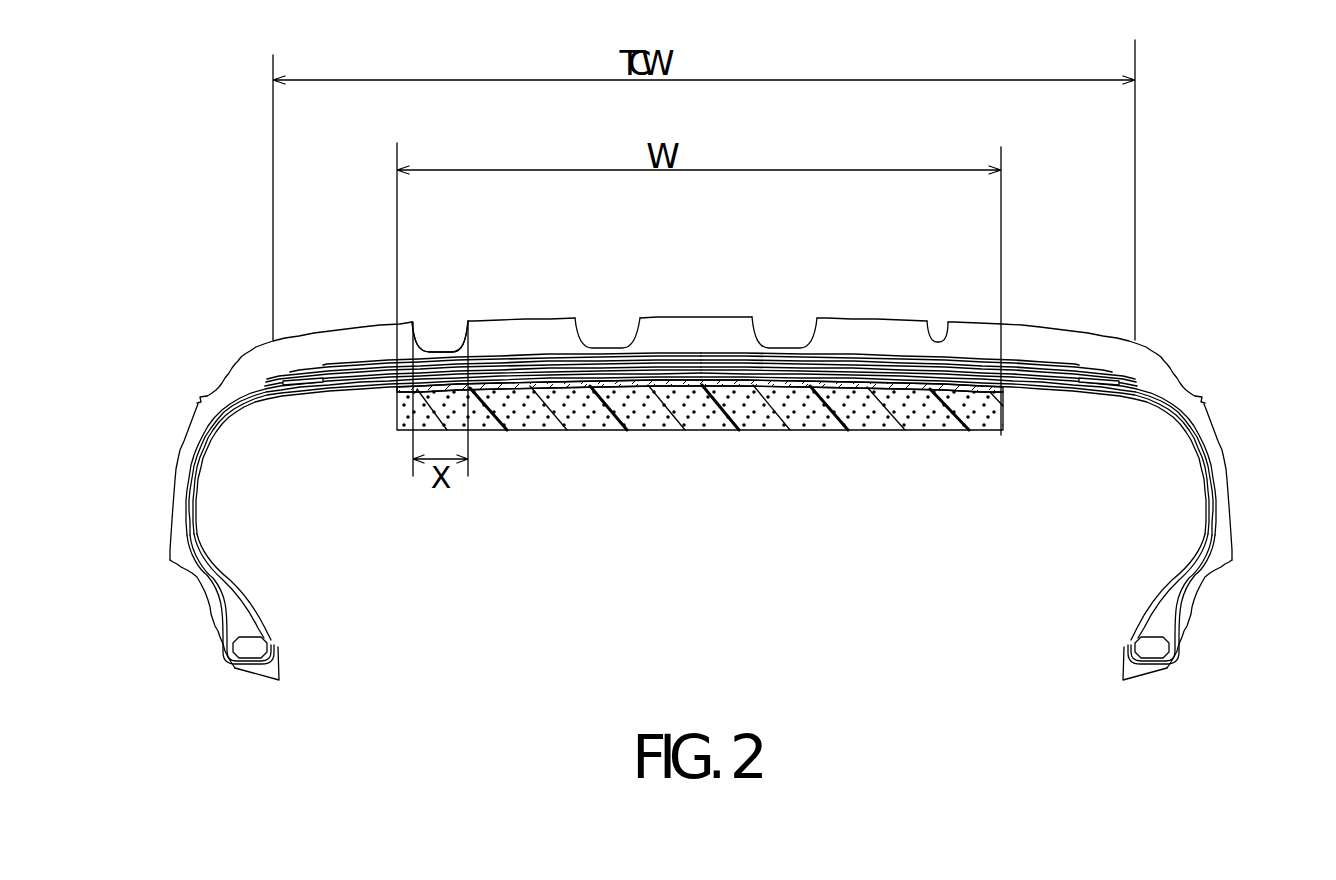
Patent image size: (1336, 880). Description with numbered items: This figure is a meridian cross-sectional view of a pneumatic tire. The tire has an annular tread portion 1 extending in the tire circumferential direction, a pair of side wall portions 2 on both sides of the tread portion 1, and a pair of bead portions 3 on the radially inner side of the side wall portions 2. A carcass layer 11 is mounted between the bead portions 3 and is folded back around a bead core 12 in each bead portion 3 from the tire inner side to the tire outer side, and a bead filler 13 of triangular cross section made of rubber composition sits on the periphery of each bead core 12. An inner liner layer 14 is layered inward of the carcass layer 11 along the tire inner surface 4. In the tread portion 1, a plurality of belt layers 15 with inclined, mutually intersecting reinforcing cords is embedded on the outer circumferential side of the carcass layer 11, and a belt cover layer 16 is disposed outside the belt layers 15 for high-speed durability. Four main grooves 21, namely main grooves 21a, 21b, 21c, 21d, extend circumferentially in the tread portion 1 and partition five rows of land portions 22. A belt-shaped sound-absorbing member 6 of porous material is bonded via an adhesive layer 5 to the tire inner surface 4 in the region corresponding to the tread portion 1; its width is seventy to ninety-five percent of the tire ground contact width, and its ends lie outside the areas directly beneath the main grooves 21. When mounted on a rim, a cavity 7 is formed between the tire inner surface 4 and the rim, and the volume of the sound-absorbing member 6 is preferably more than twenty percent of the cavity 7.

The tread portion 1 is at (882, 318).
The side wall portion 2 is at (177, 466).
The bead portion 3 is at (215, 632).
The tire inner surface 4 is at (337, 392).
The adhesive layer 5 is at (528, 388).
The sound-absorbing member 6 is at (690, 422).
The cavity 7 is at (849, 540).
The carcass layer 11 is at (1160, 400).
The bead core 12 is at (257, 643).
The bead filler 13 is at (243, 615).
The inner liner layer 14 is at (280, 648).
The belt layer 15 is at (1084, 382).
The belt cover layer 16 is at (1058, 362).
The main groove 21 is at (453, 298).
The main groove 21a is at (418, 334).
The main groove 21b is at (590, 330).
The main groove 21c is at (760, 332).
The main groove 21d is at (945, 330).
The land portion 22 is at (358, 343).